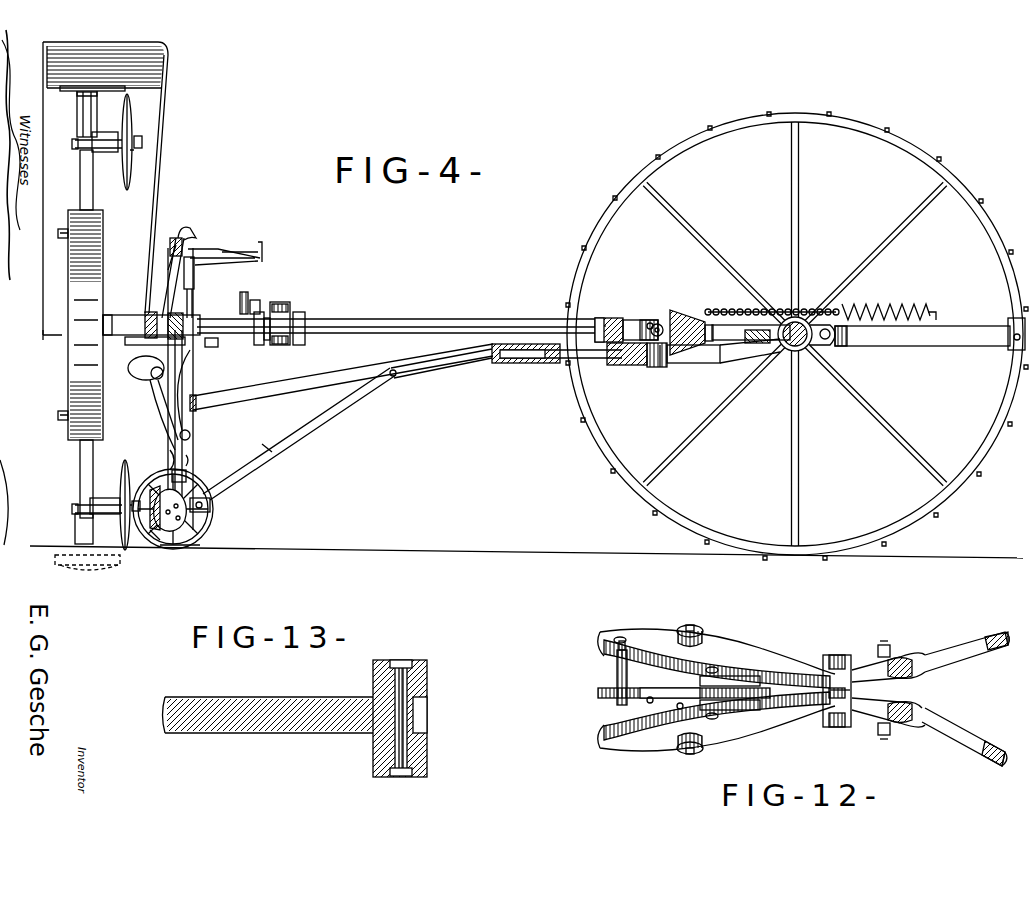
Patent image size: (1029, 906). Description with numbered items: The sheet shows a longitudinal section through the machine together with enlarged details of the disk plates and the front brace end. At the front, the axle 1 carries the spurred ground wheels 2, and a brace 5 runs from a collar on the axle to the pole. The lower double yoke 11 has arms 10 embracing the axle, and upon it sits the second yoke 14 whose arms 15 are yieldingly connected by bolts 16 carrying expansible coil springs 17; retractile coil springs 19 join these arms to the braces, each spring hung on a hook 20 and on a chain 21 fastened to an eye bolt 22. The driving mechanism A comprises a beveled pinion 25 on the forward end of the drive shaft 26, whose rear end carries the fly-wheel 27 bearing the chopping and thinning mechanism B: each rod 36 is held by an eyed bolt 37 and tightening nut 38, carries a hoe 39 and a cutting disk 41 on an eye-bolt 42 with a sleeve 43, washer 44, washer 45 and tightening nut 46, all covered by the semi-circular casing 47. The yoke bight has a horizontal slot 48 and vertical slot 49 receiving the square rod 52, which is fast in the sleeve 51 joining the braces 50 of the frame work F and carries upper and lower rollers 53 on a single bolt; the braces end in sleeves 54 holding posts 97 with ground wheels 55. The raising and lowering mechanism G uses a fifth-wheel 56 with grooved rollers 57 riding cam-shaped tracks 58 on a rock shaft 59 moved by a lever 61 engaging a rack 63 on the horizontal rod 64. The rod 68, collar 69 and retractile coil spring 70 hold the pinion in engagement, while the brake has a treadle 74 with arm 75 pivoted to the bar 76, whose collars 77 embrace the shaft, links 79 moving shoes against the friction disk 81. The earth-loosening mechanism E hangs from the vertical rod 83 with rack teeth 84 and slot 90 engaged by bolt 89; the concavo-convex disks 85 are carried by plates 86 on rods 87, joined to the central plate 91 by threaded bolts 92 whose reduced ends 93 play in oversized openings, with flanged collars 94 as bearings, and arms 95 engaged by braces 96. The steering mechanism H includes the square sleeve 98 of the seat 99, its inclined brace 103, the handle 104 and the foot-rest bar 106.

In FIG. 4, the front axle 1 is at (786, 349).
In FIG. 4, the spurred ground wheels 2 is at (838, 545).
In FIG. 4, the brace 5 is at (938, 348).
In FIG. 4, the arm of double yoke 10 is at (700, 366).
In FIG. 4, the double yoke 11 is at (600, 332).
In FIG. 4, the second yoke 14 is at (607, 316).
In FIG. 4, the arms of upper yoke 15 is at (722, 324).
In FIG. 4, the bolts 16 is at (758, 308).
In FIG. 4, the expansible coil spring 17 is at (760, 345).
In FIG. 4, the retractile coil springs 19 is at (890, 310).
In FIG. 4, the hook 20 is at (934, 314).
In FIG. 4, the chain 21 is at (812, 310).
In FIG. 4, the eye bolt 22 is at (706, 324).
In FIG. 4, the beveled pinion 25 is at (676, 312).
In FIG. 4, the drive shaft 26 is at (448, 320).
In FIG. 4, the fly-wheel 27 is at (104, 238).
In FIG. 4, the rod 36 is at (93, 190).
In FIG. 4, the bolt 37 is at (58, 233).
In FIG. 4, the tightening nut 38 is at (58, 240).
In FIG. 4, the hoe 39 is at (70, 86).
In FIG. 4, the cutting disk 41 is at (132, 118).
In FIG. 4, the eye-bolt 42 is at (75, 142).
In FIG. 4, the sleeve 43 is at (95, 150).
In FIG. 4, the washer 44 is at (110, 133).
In FIG. 4, the washer 45 is at (140, 150).
In FIG. 4, the tightening nut 46 is at (142, 140).
In FIG. 4, the flanged semi-circular casing 47 is at (152, 58).
In FIG. 4, the horizontal longitudinal slot 48 is at (612, 366).
In FIG. 4, the vertical longitudinal slot 49 is at (662, 368).
In FIG. 4, the braces 50 is at (318, 378).
In FIG. 4, the sleeve 51 is at (528, 365).
In FIG. 4, the square rod 52 is at (596, 360).
In FIG. 13, the square rod 52 is at (266, 735).
In FIG. 4, the rollers 53 is at (652, 368).
In FIG. 13, the rollers 53 is at (428, 738).
In FIG. 4, the vertically-disposed sleeve 54 is at (194, 378).
In FIG. 4, the ground wheel 55 is at (216, 502).
In FIG. 4, the fifth-wheel 56 is at (140, 320).
In FIG. 4, the grooved rollers 57 is at (135, 345).
In FIG. 4, the cam-shaped tracks 58 is at (142, 378).
In FIG. 4, the rock shaft 59 is at (158, 378).
In FIG. 4, the lever 61 is at (188, 226).
In FIG. 4, the rack 63 is at (193, 362).
In FIG. 4, the horizontal rod 64 is at (192, 432).
In FIG. 4, the rod 68 is at (657, 322).
In FIG. 4, the collar 69 is at (648, 318).
In FIG. 4, the retractile coil spring 70 is at (640, 320).
In FIG. 4, the angular treadle 74 is at (244, 290).
In FIG. 4, the vertical arm of treadle 75 is at (255, 300).
In FIG. 4, the transversely-disposed bar 76 is at (278, 302).
In FIG. 4, the depending collars 77 is at (268, 345).
In FIG. 4, the link 79 is at (240, 302).
In FIG. 4, the friction disk 81 is at (292, 302).
In FIG. 4, the vertical rod 83 is at (170, 412).
In FIG. 4, the rack teeth 84 is at (190, 460).
In FIG. 4, the concavo-convex disks 85 is at (160, 535).
In FIG. 4, the plates 86 is at (172, 545).
In FIG. 12, the plates 86 is at (726, 652).
In FIG. 4, the rod 87 is at (195, 490).
In FIG. 4, the bolt 89 is at (186, 470).
In FIG. 4, the longitudinal slot 90 is at (172, 450).
In FIG. 12, the plate 91 is at (598, 692).
In FIG. 12, the threaded bolts 92 is at (615, 666).
In FIG. 4, the reduced outer ends 93 is at (180, 530).
In FIG. 12, the reduced outer ends 93 is at (618, 636).
In FIG. 12, the flanged collars 94 is at (980, 742).
In FIG. 4, the arm 95 is at (213, 520).
In FIG. 12, the arm 95 is at (880, 695).
In FIG. 4, the brace 96 is at (262, 462).
In FIG. 4, the rotatable post 97 is at (196, 290).
In FIG. 4, the sleeve 98 is at (165, 272).
In FIG. 4, the seat 99 is at (176, 236).
In FIG. 4, the inclined brace 103 is at (240, 258).
In FIG. 4, the handle 104 is at (262, 243).
In FIG. 4, the transversely-disposed bar 106 is at (218, 346).
In FIG. 4, the driving mechanism A is at (795, 334).
In FIG. 4, the chopping and thinning mechanism B is at (29, 345).
In FIG. 12, the vertically movable disks and operating devices E is at (749, 640).
In FIG. 4, the supporting braces or frame work F is at (443, 385).
In FIG. 4, the mechanism for raising and lowering drive shaft G is at (125, 366).
In FIG. 4, the steering mechanism H is at (238, 242).